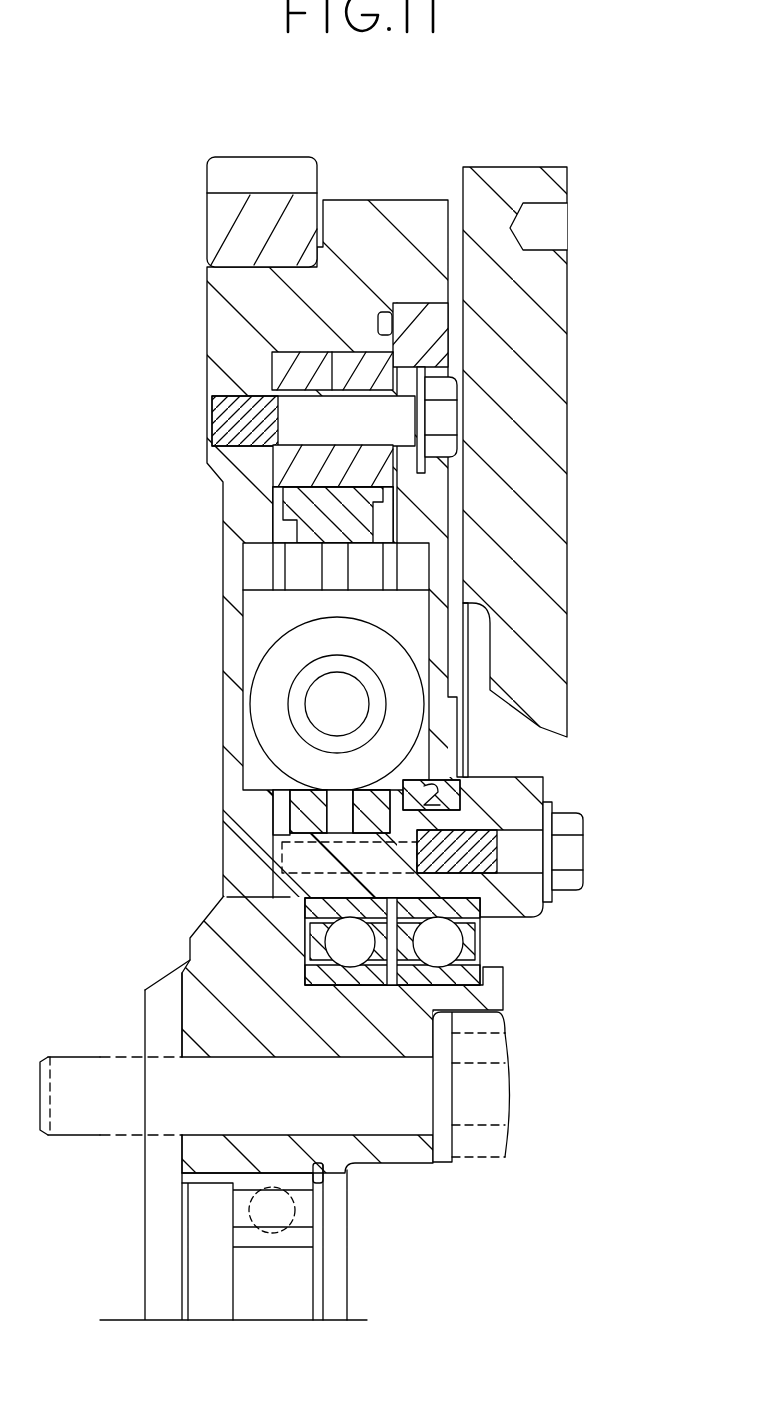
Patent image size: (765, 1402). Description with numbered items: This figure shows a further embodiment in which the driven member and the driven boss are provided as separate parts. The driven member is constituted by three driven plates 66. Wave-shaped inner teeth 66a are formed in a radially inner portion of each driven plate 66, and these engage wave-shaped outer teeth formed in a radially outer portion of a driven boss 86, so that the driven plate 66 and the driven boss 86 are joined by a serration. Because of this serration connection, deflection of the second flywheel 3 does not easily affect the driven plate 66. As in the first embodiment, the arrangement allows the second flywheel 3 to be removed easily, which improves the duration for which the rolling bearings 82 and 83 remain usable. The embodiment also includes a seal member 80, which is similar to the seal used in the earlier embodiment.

The second flywheel 3 is at (523, 442).
The driven plate 66 is at (300, 528).
The wave-shaped inner teeth 66a is at (282, 843).
The seal member 80 is at (463, 752).
The rolling bearing 82 is at (452, 1160).
The rolling bearing 83 is at (505, 1012).
The driven boss 86 is at (290, 897).